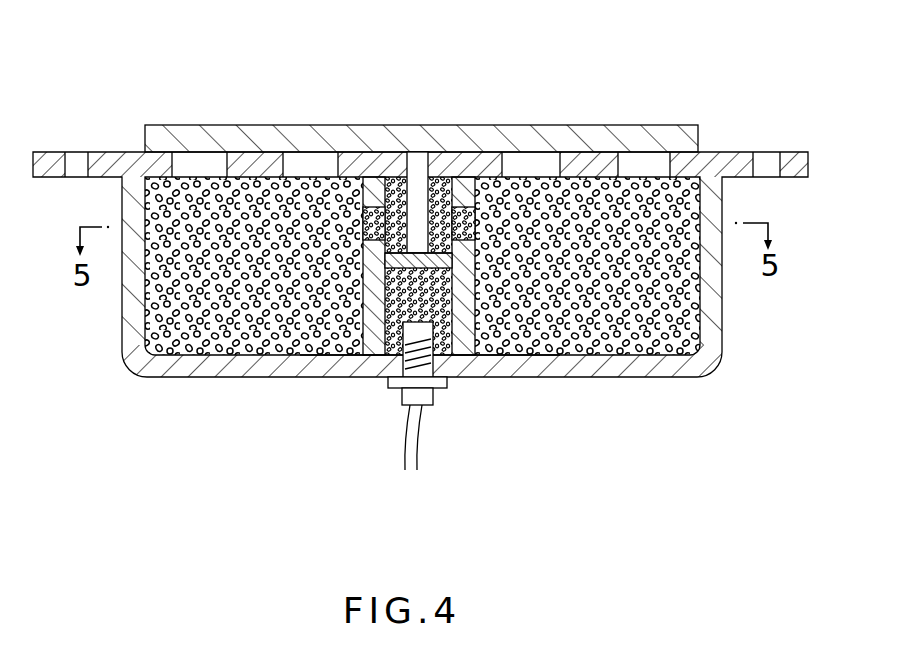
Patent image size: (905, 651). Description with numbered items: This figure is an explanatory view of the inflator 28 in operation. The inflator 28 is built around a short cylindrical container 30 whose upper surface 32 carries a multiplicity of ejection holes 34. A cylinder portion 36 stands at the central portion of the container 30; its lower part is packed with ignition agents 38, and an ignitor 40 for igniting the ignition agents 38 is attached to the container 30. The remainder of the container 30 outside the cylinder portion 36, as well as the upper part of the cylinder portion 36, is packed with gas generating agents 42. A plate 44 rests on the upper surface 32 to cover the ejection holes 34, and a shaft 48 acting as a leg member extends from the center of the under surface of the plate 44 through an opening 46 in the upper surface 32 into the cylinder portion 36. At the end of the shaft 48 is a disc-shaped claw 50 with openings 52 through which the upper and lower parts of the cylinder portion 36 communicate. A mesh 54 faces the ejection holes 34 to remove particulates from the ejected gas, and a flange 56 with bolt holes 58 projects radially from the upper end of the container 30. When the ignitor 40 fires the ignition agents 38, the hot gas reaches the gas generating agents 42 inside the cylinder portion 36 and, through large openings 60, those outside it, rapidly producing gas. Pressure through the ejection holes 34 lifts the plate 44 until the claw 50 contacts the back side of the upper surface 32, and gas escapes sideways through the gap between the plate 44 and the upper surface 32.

The inflator 28 is at (726, 361).
The container 30 is at (573, 378).
The upper surface 32 is at (248, 160).
The ejection holes 34 is at (190, 163).
The cylinder portion 36 is at (317, 362).
The ignition agents 38 is at (423, 308).
The ignitor 40 is at (402, 401).
The gas generating agents 42 is at (615, 363).
The plate 44 is at (310, 123).
The opening 46 is at (447, 158).
The shaft 48 is at (418, 195).
The claw 50 is at (455, 264).
The openings 52 is at (393, 265).
The mesh 54 is at (192, 182).
The flange 56 is at (45, 180).
The bolt holes 58 is at (82, 163).
The large openings 60 is at (365, 214).